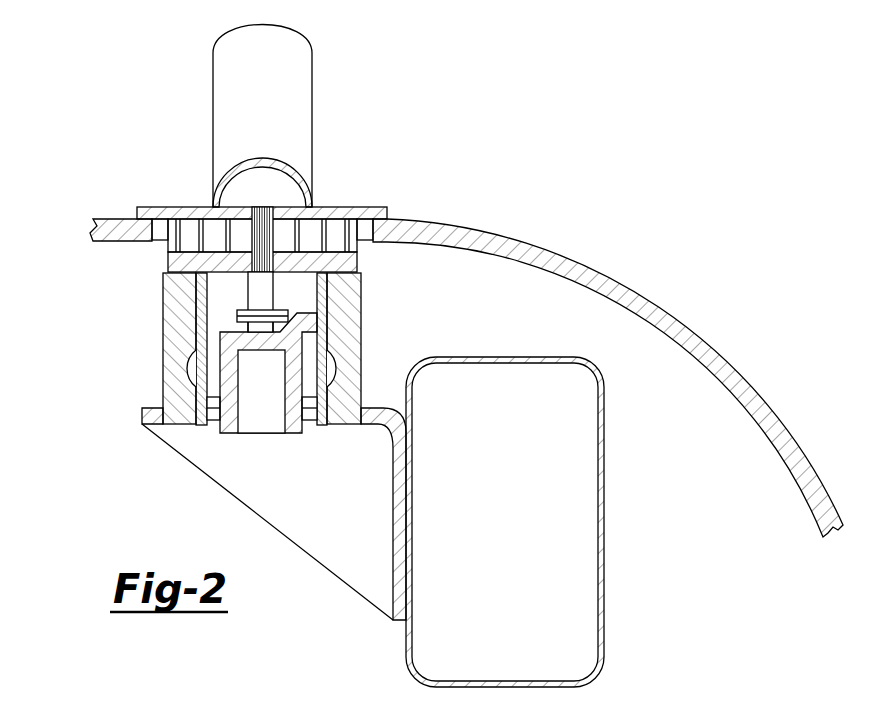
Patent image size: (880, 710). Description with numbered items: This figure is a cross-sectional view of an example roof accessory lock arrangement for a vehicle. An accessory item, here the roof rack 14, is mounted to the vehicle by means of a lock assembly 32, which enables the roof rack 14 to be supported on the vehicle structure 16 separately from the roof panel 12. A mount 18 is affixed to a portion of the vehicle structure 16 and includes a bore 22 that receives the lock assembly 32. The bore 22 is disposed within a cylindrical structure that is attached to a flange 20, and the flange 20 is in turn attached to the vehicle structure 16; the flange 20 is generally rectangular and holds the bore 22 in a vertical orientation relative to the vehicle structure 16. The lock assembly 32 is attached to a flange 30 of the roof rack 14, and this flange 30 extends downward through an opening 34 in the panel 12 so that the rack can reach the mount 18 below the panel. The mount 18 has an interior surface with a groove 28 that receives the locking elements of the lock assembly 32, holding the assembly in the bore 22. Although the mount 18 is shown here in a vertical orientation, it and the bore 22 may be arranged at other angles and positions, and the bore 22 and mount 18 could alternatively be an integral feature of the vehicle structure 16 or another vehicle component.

The roof panel 12 is at (658, 307).
The roof rack 14 is at (243, 95).
The vehicle structure 16 is at (604, 598).
The mount 18 is at (155, 391).
The flange 20 is at (188, 465).
The bore 22 is at (335, 333).
The groove 28 is at (188, 370).
The flange 30 is at (178, 258).
The lock assembly 32 is at (187, 327).
The opening 34 is at (146, 229).